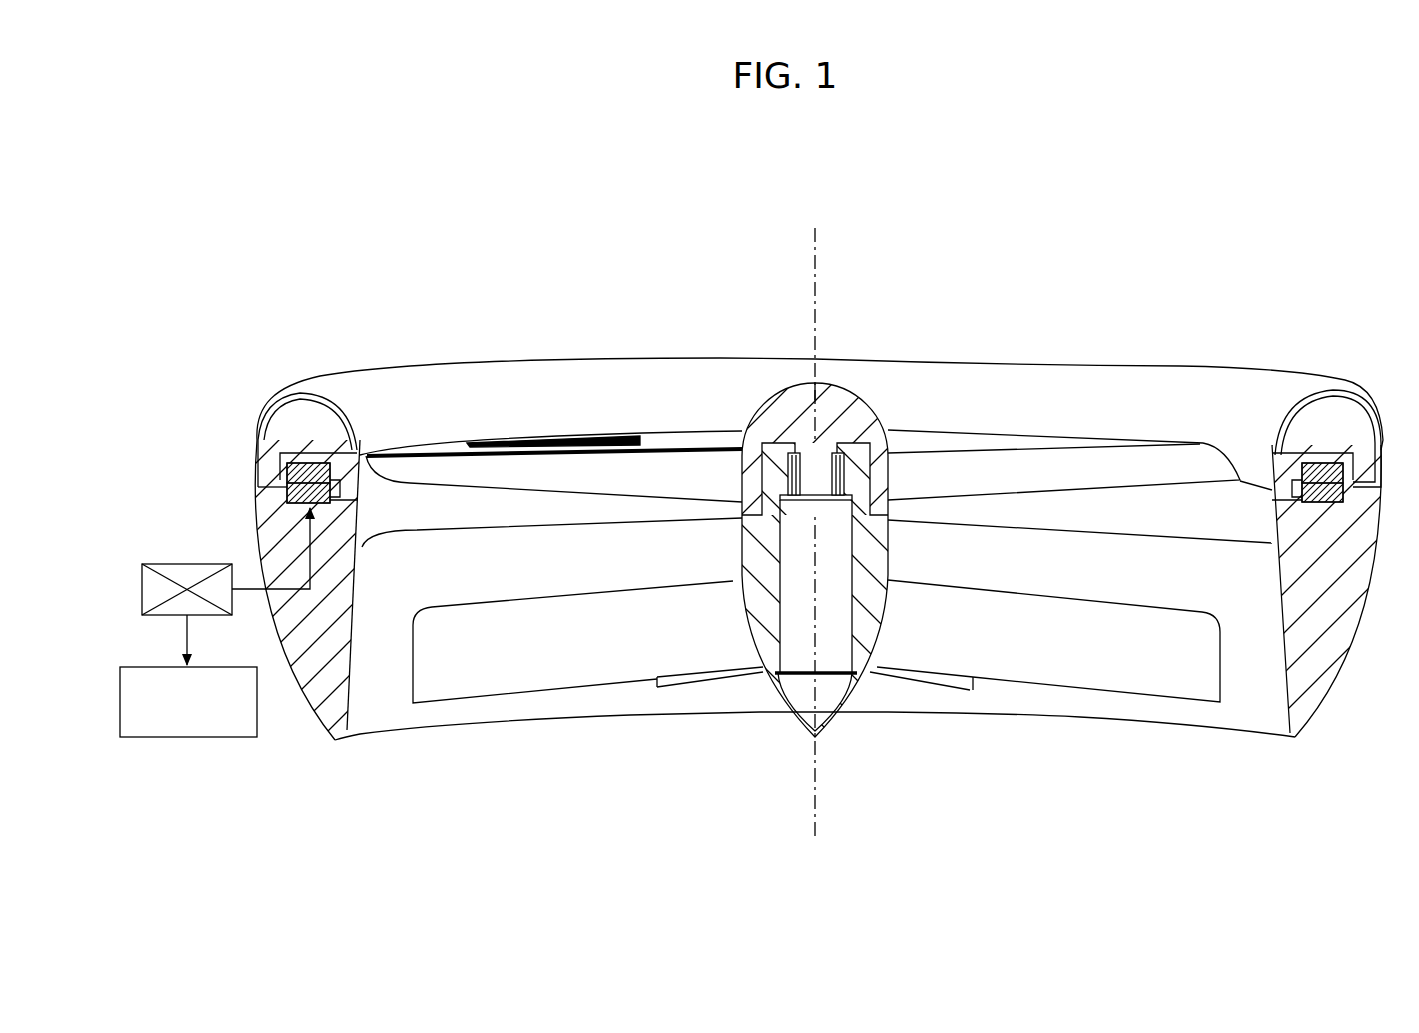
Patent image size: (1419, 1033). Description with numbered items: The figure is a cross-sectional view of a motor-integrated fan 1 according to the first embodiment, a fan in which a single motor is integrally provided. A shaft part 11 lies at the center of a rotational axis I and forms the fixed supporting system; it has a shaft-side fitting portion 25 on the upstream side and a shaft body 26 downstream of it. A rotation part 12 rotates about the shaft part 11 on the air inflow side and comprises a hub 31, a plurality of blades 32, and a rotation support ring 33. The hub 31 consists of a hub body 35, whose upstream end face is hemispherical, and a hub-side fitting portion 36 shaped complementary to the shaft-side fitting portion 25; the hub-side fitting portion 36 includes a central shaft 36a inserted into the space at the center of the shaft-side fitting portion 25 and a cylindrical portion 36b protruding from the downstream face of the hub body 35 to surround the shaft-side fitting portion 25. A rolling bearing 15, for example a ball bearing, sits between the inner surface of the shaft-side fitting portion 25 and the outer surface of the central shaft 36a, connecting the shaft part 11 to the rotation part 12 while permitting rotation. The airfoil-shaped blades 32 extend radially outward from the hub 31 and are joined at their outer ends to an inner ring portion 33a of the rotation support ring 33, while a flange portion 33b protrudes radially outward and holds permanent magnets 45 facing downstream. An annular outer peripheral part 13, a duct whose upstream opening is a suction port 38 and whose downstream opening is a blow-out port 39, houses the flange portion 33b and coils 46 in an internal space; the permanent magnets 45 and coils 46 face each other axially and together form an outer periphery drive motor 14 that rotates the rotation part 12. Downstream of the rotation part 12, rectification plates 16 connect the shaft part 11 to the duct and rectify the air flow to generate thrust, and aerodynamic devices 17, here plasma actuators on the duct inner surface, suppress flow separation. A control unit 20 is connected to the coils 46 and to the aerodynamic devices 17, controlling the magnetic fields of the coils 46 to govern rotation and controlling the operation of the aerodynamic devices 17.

The motor-integrated fan 1 is at (906, 286).
The shaft part 11 is at (768, 690).
The rotation part 12 is at (868, 397).
The outer peripheral part 13 is at (438, 364).
The motor 14 is at (1366, 472).
The rolling bearing 15 is at (777, 453).
The rectification plates 16 is at (1068, 667).
The aerodynamic devices 17 is at (216, 674).
The control unit 20 is at (204, 563).
The shaft-side fitting portion 25 is at (857, 446).
The shaft body 26 is at (865, 627).
The hub 31 is at (829, 380).
The blades 32 is at (553, 470).
The rotation support ring 33 is at (326, 449).
The inner ring portion 33a is at (355, 462).
The flange portion 33b is at (284, 452).
The hub body 35 is at (855, 453).
The hub-side fitting portion 36 is at (735, 478).
The central shaft 36a is at (757, 615).
The cylindrical portion 36b is at (742, 548).
The suction port 38 is at (1084, 360).
The blow-out port 39 is at (1137, 742).
The permanent magnets 45 is at (1330, 455).
The coils 46 is at (1322, 493).
The rotational axis I is at (820, 248).